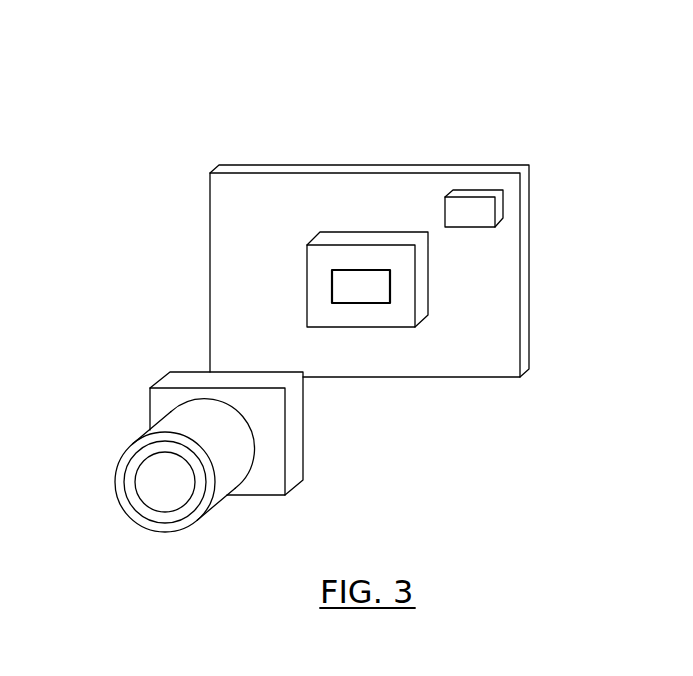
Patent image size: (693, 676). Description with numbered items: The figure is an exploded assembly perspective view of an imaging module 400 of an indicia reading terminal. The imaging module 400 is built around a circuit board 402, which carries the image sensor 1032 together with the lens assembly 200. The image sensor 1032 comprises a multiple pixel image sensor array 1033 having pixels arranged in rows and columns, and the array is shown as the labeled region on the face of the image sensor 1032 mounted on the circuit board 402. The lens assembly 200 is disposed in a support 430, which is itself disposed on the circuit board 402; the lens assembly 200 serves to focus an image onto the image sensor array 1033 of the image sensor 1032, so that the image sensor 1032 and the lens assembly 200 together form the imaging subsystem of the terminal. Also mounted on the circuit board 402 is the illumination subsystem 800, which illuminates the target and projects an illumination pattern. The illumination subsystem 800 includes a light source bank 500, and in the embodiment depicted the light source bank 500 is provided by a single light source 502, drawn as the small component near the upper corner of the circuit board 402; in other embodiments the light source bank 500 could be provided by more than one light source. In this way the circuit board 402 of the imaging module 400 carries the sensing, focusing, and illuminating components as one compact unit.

The imaging module 400 is at (373, 325).
The circuit board 402 is at (500, 345).
The single light source 502 is at (462, 207).
The illumination subsystem 800 is at (559, 204).
The light source bank 500 is at (495, 174).
The image sensor 1032 is at (383, 333).
The image sensor array 1033 is at (361, 286).
The support 430 is at (172, 426).
The lens assembly 200 is at (165, 492).